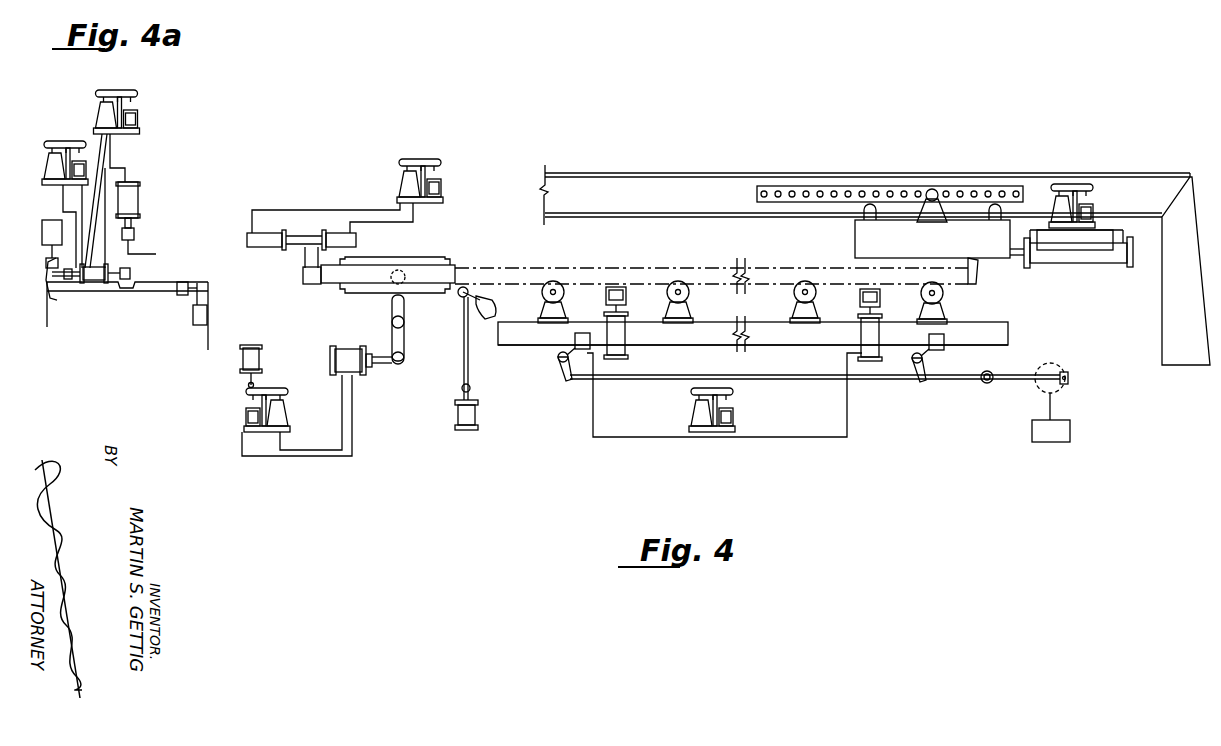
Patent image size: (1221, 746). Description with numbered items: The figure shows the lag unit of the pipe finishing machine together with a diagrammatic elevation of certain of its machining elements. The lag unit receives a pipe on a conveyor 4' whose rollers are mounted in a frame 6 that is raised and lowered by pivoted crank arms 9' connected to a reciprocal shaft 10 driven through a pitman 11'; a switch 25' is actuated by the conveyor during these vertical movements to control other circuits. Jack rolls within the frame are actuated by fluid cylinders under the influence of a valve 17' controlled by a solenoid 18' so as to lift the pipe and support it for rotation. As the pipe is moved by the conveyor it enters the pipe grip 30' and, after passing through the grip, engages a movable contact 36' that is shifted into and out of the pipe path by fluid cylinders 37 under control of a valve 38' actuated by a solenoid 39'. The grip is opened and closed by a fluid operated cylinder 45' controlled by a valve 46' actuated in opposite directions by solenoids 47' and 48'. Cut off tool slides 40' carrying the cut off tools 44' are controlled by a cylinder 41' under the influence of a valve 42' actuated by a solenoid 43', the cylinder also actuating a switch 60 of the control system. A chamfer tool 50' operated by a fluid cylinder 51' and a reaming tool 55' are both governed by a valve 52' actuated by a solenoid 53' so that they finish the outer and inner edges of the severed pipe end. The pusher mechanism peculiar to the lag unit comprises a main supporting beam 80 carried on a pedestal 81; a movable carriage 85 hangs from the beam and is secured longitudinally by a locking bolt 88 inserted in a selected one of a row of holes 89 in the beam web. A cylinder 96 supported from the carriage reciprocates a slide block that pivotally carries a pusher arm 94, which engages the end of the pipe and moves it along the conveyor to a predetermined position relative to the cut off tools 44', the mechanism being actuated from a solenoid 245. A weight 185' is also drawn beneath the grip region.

In FIG. 4A, the valve 52' is at (99, 108).
In FIG. 4A, the solenoid 53' is at (158, 111).
In FIG. 4A, the valve 42' is at (54, 158).
In FIG. 4A, the solenoid 43' is at (78, 185).
In FIG. 4A, the switch 60 is at (54, 221).
In FIG. 4A, the cylinder 41' is at (39, 294).
In FIG. 4A, the fluid cylinder 51' is at (151, 209).
In FIG. 4A, the chamfer tool 50' is at (155, 256).
In FIG. 4A, the cut off tool slides 40' is at (80, 297).
In FIG. 4A, the reaming tool 55' is at (159, 271).
In FIG. 4A, the cut off tools 44' is at (127, 316).
In FIG. 4A, the valve 38' is at (400, 172).
In FIG. 4A, the solenoid 39' is at (455, 169).
In FIG. 4A, the fluid cylinders 37 is at (262, 241).
In FIG. 4A, the contact 36' is at (293, 277).
In FIG. 4A, the pipe grip 30' is at (388, 263).
In FIG. 4A, the fluid operated cylinder 45' is at (337, 354).
In FIG. 4A, the solenoid 48' is at (273, 366).
In FIG. 4A, the valve 46' is at (290, 410).
In FIG. 4A, the solenoid 47' is at (230, 415).
In FIG. 4A, the weight 185' is at (447, 359).
In FIG. 4, the main supporting beam 80 is at (712, 175).
In FIG. 4, the pedestal 81 is at (1186, 271).
In FIG. 4, the holes 89 is at (818, 188).
In FIG. 4, the locking bolt 88 is at (928, 190).
In FIG. 4, the movable carriage 85 is at (932, 239).
In FIG. 4, the cylinder 96 is at (1076, 258).
In FIG. 4, the solenoid 245 is at (1090, 207).
In FIG. 4, the pusher arm 94 is at (980, 263).
In FIG. 4, the conveyor 4' is at (768, 339).
In FIG. 4, the frame 6 is at (778, 338).
In FIG. 4, the pivoted crank arms 9' is at (914, 358).
In FIG. 4, the reciprocal shaft 10 is at (950, 381).
In FIG. 4, the pitman 11' is at (987, 391).
In FIG. 4, the switch 25' is at (1051, 402).
In FIG. 4, the valve 17' is at (697, 410).
In FIG. 4, the solenoid 18' is at (747, 407).